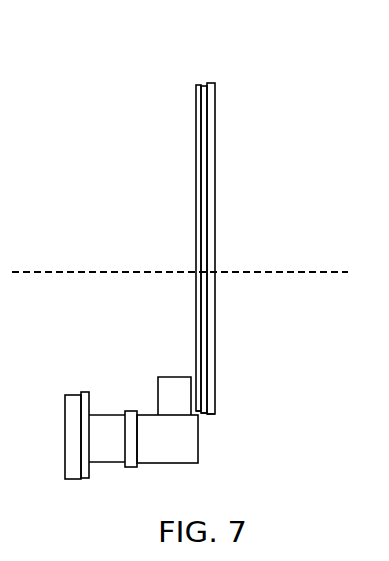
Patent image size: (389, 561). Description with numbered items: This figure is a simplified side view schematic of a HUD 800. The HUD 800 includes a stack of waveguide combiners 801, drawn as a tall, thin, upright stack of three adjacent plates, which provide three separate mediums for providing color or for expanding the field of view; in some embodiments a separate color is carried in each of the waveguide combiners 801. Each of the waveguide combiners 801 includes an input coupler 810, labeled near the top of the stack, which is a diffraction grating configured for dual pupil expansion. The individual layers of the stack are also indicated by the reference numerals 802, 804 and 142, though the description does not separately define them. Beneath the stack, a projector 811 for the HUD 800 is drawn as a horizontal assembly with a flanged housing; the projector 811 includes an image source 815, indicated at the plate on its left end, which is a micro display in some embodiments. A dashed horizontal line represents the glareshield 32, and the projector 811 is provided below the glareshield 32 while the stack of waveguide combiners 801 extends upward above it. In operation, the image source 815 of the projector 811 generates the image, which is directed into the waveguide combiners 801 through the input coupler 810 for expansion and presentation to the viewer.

The HUD 800 is at (262, 183).
The bar / sensor strip 804 is at (210, 105).
The left strip of bar 802 is at (197, 247).
The input coupler 810 is at (205, 85).
The right strip of bar 142 is at (218, 230).
The waveguide combiners 801 is at (207, 415).
The projector 811 is at (112, 485).
The image source 815 is at (77, 400).
The glareshield 32 is at (313, 272).